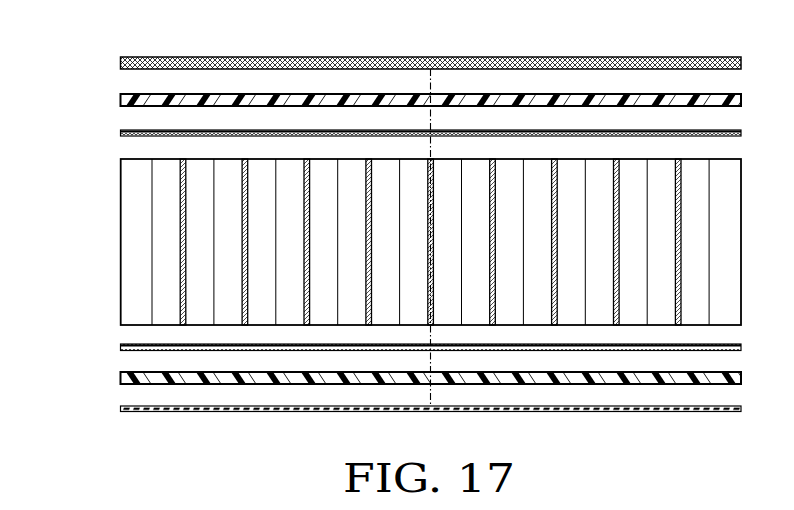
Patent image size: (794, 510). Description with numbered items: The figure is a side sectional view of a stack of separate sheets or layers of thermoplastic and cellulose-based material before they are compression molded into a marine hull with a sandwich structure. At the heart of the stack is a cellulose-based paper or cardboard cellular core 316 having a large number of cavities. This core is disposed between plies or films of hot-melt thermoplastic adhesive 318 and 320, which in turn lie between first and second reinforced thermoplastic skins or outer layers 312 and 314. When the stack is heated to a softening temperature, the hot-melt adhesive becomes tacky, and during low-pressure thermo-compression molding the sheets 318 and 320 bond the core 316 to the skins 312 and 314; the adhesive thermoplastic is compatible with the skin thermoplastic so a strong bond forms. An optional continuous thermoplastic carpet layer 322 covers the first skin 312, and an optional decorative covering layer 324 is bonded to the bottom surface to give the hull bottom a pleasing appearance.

The first reinforced thermoplastic skin 312 is at (120, 99).
The second reinforced thermoplastic skin 314 is at (120, 378).
The cellular core 316 is at (120, 242).
The hot-melt adhesive sheet 318 is at (120, 133).
The hot-melt adhesive sheet 320 is at (120, 347).
The carpet layer 322 is at (120, 62).
The decorative covering layer 324 is at (120, 408).